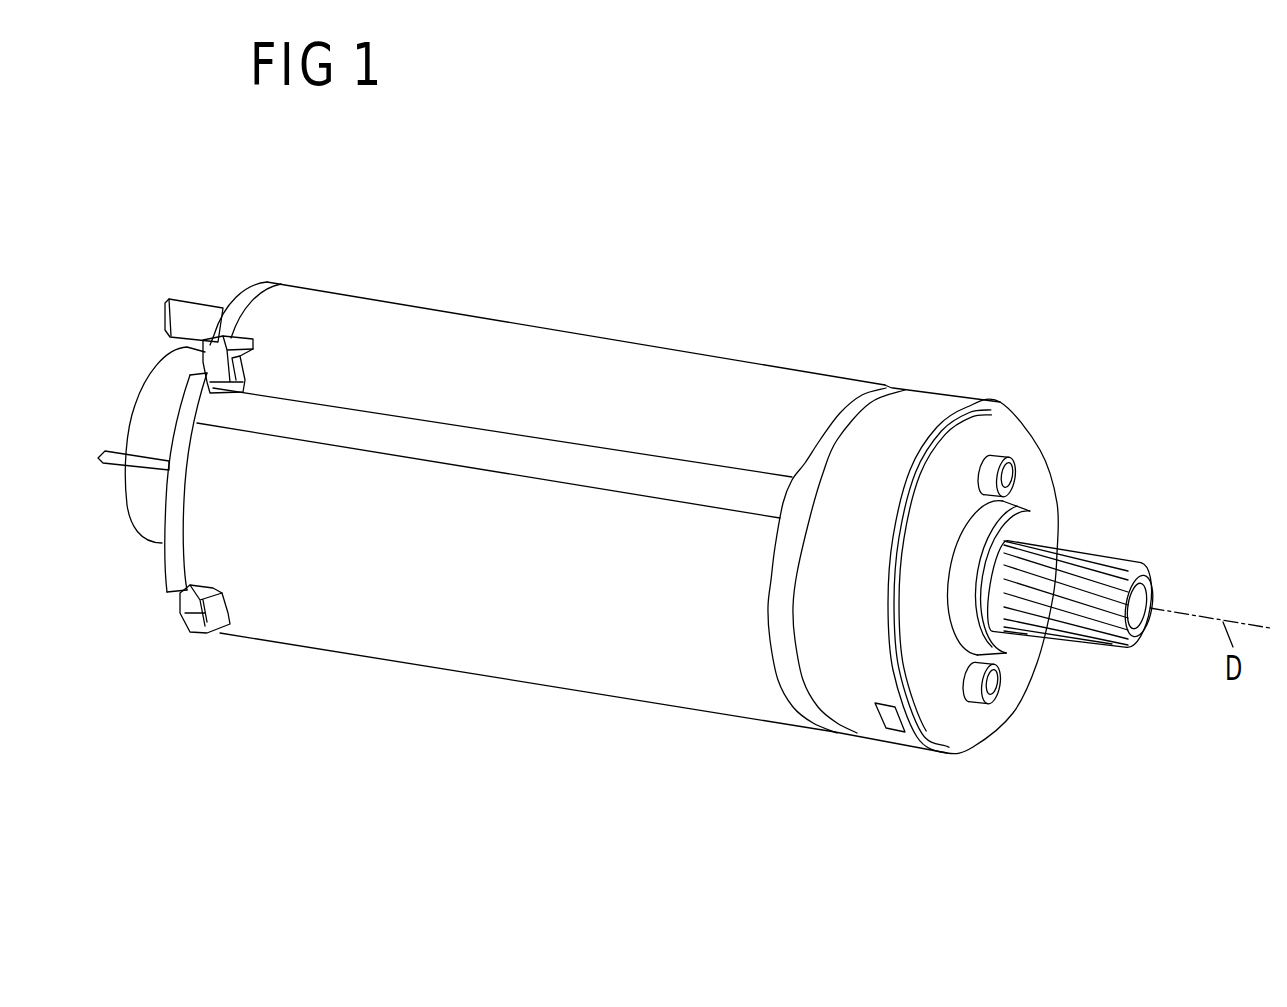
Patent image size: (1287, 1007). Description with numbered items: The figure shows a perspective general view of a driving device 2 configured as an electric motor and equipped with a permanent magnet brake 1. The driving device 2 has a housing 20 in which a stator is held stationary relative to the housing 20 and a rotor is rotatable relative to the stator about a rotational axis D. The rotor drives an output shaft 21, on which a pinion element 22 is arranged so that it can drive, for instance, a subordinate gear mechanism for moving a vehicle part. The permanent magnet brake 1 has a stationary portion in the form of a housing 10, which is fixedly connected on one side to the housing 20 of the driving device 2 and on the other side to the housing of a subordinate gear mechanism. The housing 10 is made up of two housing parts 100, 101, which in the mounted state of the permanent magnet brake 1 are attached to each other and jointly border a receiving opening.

The permanent magnet brake 1 is at (998, 377).
The driving device 2 is at (645, 312).
The housing 10 is at (866, 726).
The housing 20 is at (635, 682).
The output shaft 21 is at (1127, 597).
The pinion element 22 is at (1137, 637).
The housing part 100 is at (925, 402).
The housing part 101 is at (1027, 445).